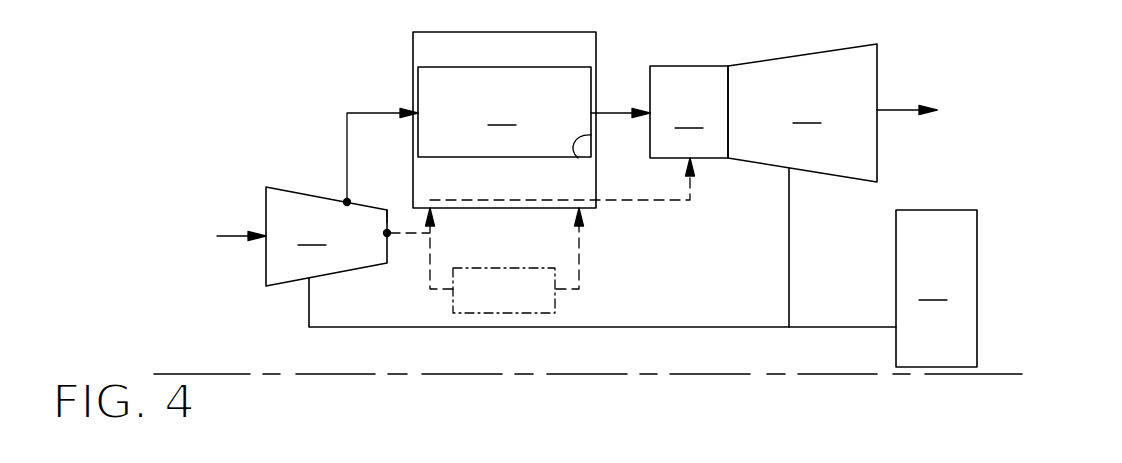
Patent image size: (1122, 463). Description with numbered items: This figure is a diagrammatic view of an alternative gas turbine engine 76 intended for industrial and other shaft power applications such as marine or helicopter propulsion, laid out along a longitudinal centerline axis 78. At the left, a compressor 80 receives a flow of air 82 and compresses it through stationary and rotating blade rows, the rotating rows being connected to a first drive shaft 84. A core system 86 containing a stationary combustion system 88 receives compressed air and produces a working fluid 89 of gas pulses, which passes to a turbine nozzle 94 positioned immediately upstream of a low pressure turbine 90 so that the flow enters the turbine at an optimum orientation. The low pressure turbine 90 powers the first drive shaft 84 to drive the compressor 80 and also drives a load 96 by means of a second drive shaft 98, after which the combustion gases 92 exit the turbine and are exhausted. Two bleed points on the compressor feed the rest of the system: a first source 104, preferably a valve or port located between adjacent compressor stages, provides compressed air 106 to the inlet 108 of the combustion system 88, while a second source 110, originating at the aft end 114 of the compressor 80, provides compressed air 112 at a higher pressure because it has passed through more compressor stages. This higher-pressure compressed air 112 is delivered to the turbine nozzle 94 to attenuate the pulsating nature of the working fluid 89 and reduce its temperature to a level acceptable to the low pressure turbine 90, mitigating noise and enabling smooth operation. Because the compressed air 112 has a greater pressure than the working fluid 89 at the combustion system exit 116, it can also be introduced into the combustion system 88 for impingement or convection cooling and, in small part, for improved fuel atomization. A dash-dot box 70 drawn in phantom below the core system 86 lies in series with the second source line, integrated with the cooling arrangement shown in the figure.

The controller 70 is at (505, 266).
The gas turbine engine 76 is at (840, 32).
The longitudinal centerline axis 78 is at (998, 375).
The compressor 80 is at (326, 236).
The flow of air 82 is at (232, 236).
The first drive shaft 84 is at (628, 328).
The core system 86 is at (600, 31).
The stationary combustion system 88 is at (504, 112).
The working fluid 89 is at (613, 110).
The low pressure turbine 90 is at (802, 113).
The combustion gases 92 is at (895, 109).
The turbine nozzle 94 is at (689, 112).
The load 96 is at (936, 288).
The second drive shaft 98 is at (838, 328).
The first source 104 is at (345, 200).
The compressed air 106 is at (363, 110).
The inlet 108 is at (418, 78).
The second source 110 is at (395, 242).
The compressed air 112 is at (427, 258).
The aft end 114 is at (390, 215).
The combustion system exit 116 is at (578, 158).